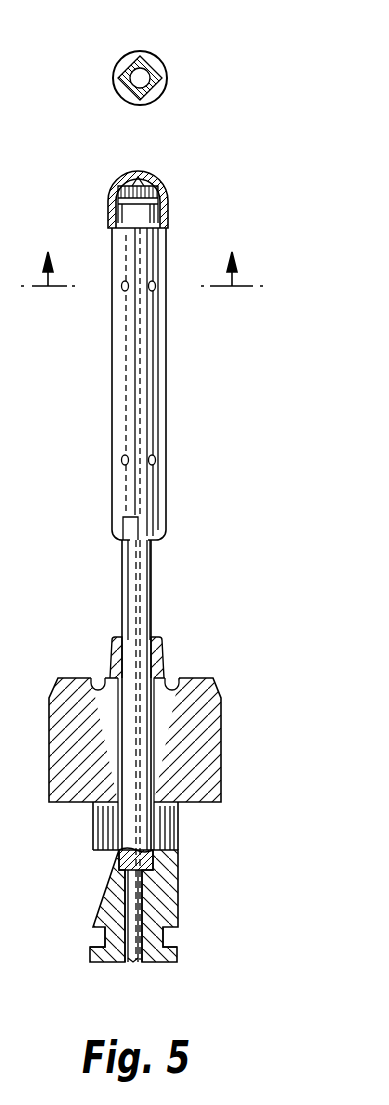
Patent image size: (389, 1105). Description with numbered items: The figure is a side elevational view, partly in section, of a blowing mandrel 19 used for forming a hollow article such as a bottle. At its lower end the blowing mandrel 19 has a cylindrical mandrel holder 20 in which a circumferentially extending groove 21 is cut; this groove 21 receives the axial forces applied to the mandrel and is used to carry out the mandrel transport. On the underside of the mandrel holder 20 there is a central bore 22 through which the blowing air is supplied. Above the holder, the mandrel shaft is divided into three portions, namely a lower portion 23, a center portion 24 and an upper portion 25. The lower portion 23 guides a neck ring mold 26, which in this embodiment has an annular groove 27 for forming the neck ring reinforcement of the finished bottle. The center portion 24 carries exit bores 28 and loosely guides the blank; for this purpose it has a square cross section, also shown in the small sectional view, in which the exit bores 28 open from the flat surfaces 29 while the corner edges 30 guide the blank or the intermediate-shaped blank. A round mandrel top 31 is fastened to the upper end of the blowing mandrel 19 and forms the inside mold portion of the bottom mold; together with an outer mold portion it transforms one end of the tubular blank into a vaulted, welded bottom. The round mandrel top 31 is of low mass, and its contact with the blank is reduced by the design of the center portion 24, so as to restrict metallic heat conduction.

The blowing mandrel 19 is at (156, 576).
The cylindrical mandrel holder 20 is at (158, 885).
The circumferentially extending groove 21 is at (166, 938).
The central bore 22 is at (134, 962).
The lower portion 23 is at (140, 618).
The center portion 24 is at (158, 412).
The upper portion 25 is at (153, 213).
The neck ring mold 26 is at (202, 750).
The annular groove 27 is at (174, 678).
The exit bores 28 is at (155, 460).
The surfaces 29 is at (147, 60).
The corner edges 30 is at (163, 78).
The round mandrel top 31 is at (163, 184).